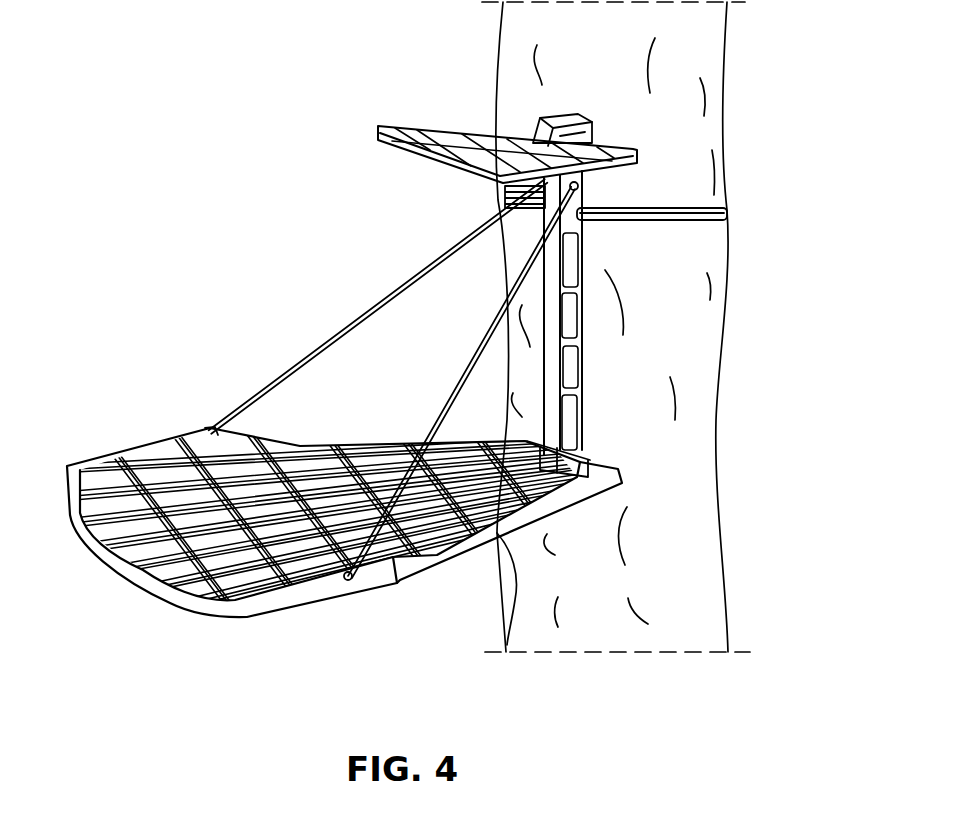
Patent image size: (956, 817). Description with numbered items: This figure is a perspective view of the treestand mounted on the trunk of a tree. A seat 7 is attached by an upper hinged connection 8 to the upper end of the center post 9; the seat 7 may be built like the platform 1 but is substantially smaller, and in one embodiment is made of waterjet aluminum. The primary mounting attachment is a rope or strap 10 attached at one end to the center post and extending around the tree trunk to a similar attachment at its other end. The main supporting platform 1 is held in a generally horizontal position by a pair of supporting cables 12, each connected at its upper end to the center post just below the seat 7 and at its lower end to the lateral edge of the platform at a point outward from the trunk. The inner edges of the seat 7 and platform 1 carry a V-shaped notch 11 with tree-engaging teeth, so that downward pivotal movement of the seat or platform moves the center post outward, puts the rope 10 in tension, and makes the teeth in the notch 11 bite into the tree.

The platform 1 is at (160, 605).
The seat 7 is at (436, 122).
The upper hinged connection 8 is at (588, 120).
The center post 9 is at (585, 188).
The rope or strap 10 is at (726, 212).
The V-shaped notch 11 is at (608, 455).
The supporting cables 12 is at (343, 330).